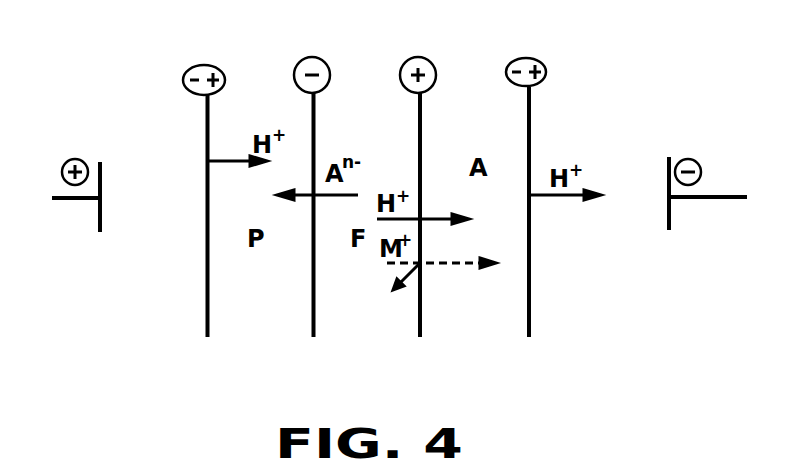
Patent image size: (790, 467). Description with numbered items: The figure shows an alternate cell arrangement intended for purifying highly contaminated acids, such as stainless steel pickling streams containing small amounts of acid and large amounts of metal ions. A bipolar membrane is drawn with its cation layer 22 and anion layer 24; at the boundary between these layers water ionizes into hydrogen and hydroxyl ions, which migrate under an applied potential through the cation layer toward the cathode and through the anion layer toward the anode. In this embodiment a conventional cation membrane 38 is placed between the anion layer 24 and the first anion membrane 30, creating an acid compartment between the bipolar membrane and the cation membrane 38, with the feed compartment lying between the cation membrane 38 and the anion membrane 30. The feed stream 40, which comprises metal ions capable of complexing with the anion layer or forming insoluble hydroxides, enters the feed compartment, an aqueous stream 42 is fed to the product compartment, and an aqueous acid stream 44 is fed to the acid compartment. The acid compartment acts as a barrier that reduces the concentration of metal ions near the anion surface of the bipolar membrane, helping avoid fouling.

The cation layer 22 is at (536, 180).
The anion layer 24 is at (508, 65).
The first anion membrane 30 is at (315, 117).
The cation membrane 38 is at (421, 112).
The feed stream 40 is at (362, 352).
The aqueous stream 42 is at (265, 352).
The aqueous acid stream 44 is at (472, 352).